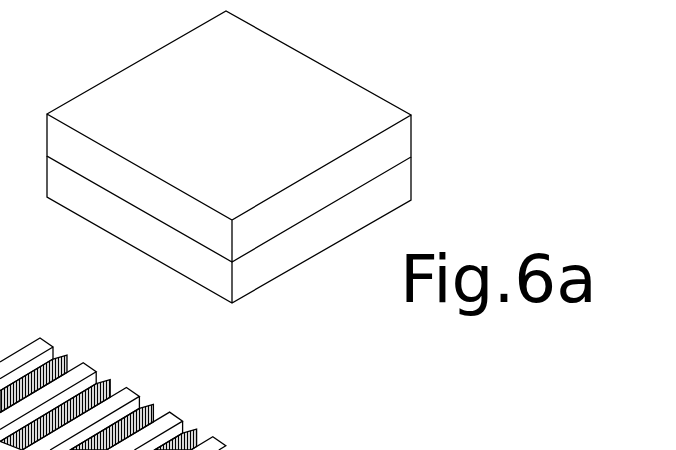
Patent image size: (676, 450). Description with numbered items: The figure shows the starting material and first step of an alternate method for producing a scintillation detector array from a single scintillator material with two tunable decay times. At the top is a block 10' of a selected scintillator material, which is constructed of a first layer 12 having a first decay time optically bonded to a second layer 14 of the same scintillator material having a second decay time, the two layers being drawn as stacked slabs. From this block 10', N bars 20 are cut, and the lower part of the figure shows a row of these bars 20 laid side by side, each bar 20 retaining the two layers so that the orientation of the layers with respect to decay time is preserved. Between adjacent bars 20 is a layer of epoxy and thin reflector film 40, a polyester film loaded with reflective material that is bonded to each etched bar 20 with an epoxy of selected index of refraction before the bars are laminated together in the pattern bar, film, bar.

The block 10' is at (275, 157).
The first layer 12 is at (398, 143).
The second layer 14 is at (398, 185).
The bars 20 is at (51, 341).
The reflector film 40 is at (68, 357).